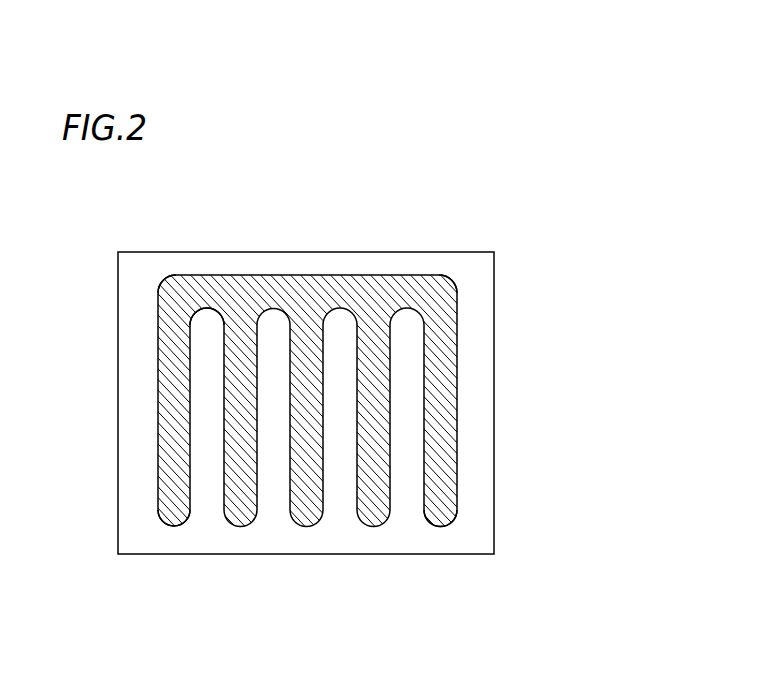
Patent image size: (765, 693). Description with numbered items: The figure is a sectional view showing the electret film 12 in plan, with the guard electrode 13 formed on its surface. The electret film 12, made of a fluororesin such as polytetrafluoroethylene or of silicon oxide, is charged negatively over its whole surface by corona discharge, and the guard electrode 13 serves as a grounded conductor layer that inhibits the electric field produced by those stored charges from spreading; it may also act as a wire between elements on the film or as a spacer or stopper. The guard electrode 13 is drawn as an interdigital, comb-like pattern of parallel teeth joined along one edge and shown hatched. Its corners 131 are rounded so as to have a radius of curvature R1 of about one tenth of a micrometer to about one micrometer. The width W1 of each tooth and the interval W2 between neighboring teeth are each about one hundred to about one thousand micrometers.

The electret film 12 is at (138, 275).
The guard electrode 13 is at (400, 297).
The corners 131 is at (161, 285).
The radius of curvature R1 is at (451, 267).
The width of teeth W1 is at (158, 510).
The interval between the teeth W2 is at (224, 510).